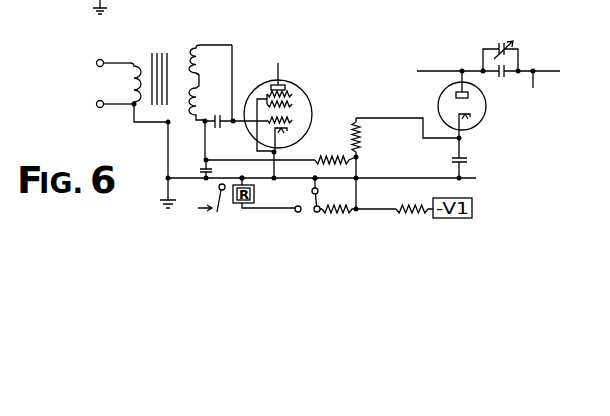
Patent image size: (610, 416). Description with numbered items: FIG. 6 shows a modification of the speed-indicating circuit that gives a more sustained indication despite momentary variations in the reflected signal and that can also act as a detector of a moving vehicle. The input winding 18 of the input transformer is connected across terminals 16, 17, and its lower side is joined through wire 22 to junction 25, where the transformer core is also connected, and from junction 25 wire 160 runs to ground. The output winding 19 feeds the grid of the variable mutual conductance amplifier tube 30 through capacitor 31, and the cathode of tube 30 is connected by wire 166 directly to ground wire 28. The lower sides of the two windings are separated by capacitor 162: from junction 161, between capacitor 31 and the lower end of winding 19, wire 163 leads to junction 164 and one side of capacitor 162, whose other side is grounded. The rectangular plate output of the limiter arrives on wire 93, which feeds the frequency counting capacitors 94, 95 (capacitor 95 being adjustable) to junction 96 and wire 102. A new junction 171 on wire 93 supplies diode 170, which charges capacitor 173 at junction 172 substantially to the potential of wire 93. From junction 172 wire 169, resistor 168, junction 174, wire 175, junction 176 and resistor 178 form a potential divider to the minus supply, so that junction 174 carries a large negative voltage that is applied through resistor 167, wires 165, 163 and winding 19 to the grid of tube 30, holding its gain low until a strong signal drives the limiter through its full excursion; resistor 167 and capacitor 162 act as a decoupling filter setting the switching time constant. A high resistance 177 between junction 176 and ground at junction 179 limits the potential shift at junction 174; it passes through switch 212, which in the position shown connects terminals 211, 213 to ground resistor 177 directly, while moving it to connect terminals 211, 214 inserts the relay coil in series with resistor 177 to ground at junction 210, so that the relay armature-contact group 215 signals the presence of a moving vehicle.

The terminal 16 is at (96, 63).
The terminal 17 is at (96, 105).
The input winding 18 is at (134, 64).
The output winding 19 is at (203, 90).
The wire 22 is at (136, 123).
The junction 25 is at (166, 125).
The ground wire 28 is at (231, 0).
The amplifier tube 30 is at (295, 84).
The capacitor 31 is at (199, 114).
The wire 93 is at (427, 71).
The capacitor 94 is at (502, 76).
The adjustable capacitor 95 is at (501, 44).
The junction 96 is at (533, 69).
The wire 102 is at (548, 72).
The wire 160 is at (167, 165).
The junction 161 is at (204, 140).
The capacitor 162 is at (194, 170).
The wire 163 is at (204, 161).
The junction 164 is at (209, 158).
The wire 165 is at (217, 161).
The wire 166 is at (276, 168).
The resistor 167 is at (328, 157).
The resistor 168 is at (352, 131).
The wire 169 is at (400, 118).
The diode 170 is at (442, 96).
The junction 171 is at (462, 67).
The junction 172 is at (462, 139).
The capacitor 173 is at (451, 160).
The junction 174 is at (359, 157).
The wire 175 is at (359, 168).
The junction 176 is at (371, 195).
The high resistance 177 is at (338, 199).
The resistor 178 is at (394, 199).
The junction 179 is at (318, 178).
The junction 210 is at (243, 180).
The terminal 211 is at (316, 211).
The switch 212 is at (296, 206).
The terminal 213 is at (311, 190).
The terminal 214 is at (291, 207).
The armature-contact group 215 is at (217, 205).